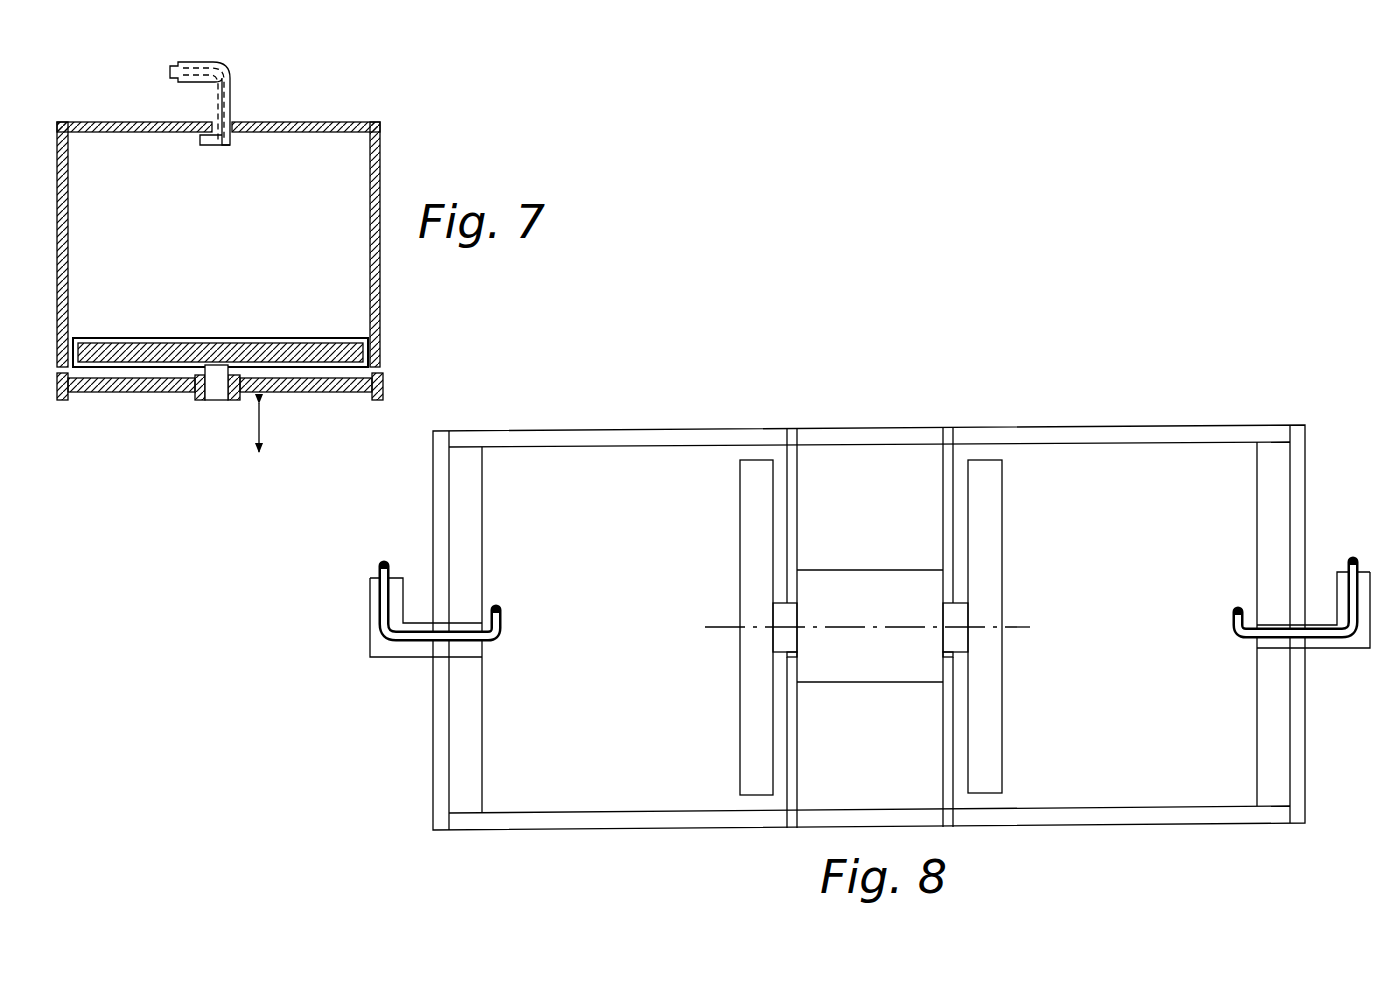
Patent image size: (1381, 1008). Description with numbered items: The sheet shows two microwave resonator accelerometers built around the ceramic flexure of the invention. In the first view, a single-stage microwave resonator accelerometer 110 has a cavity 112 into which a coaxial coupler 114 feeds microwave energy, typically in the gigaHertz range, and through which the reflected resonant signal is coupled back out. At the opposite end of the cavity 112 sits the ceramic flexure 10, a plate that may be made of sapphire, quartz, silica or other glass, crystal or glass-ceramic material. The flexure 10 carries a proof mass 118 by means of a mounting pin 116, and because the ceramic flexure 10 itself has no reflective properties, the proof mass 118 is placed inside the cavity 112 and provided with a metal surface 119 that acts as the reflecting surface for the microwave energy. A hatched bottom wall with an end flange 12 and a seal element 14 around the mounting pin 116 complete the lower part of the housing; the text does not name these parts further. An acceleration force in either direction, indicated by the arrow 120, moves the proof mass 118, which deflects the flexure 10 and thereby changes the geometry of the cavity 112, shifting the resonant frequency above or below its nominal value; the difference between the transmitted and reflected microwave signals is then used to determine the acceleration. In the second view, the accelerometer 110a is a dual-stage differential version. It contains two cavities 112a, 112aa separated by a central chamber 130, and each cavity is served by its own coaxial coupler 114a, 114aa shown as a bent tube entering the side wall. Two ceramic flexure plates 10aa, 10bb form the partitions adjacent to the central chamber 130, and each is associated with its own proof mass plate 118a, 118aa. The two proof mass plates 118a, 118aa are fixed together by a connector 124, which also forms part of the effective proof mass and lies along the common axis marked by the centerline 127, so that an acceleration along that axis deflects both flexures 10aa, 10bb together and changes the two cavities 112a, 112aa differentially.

In FIG. 7, the single-stage microwave resonator accelerometer 110 is at (219, 216).
In FIG. 7, the cavity 112 is at (232, 216).
In FIG. 7, the coaxial coupler 114 is at (232, 84).
In FIG. 7, the mounting pin 116 is at (214, 372).
In FIG. 7, the proof mass 118 is at (238, 338).
In FIG. 7, the metal surface 119 is at (220, 326).
In FIG. 7, the bottom flange 12 is at (388, 375).
In FIG. 7, the arrow 120 is at (268, 430).
In FIG. 7, the seal 14 is at (200, 400).
In FIG. 7, the ceramic flexure 10 is at (257, 415).
In FIG. 8, the multi-chamber tank assembly 110a is at (1078, 351).
In FIG. 8, the cavity 112a is at (618, 431).
In FIG. 8, the cavity 112aa is at (1108, 426).
In FIG. 8, the central chamber 130 is at (885, 428).
In FIG. 8, the ceramic flexure plate 10aa is at (798, 490).
In FIG. 8, the ceramic flexure plate 10bb is at (943, 740).
In FIG. 8, the connector 124 is at (858, 570).
In FIG. 8, the axis centerline 127 is at (718, 627).
In FIG. 8, the proof mass plate 118a is at (740, 725).
In FIG. 8, the proof mass plate 118aa is at (1002, 725).
In FIG. 8, the left inlet pipe 114a is at (370, 630).
In FIG. 8, the right inlet pipe 114aa is at (1343, 650).